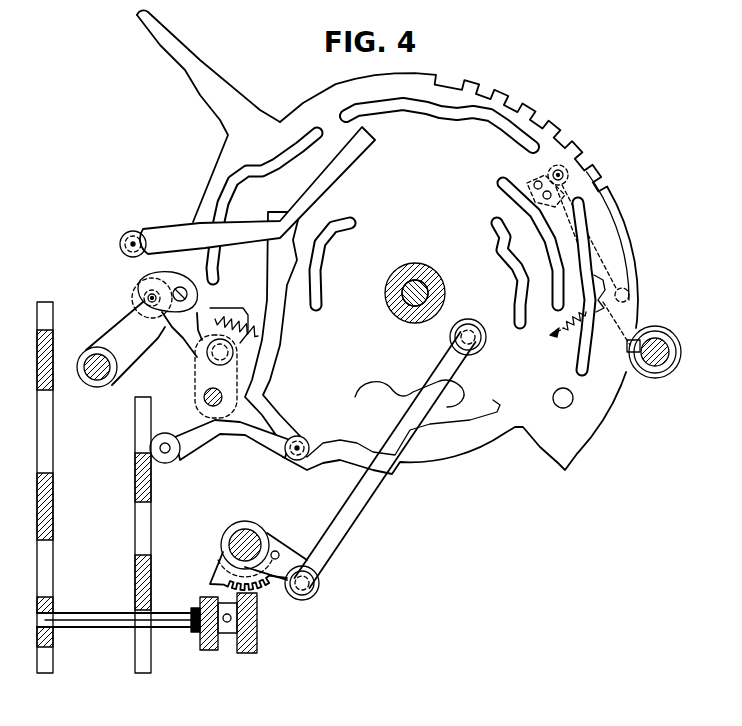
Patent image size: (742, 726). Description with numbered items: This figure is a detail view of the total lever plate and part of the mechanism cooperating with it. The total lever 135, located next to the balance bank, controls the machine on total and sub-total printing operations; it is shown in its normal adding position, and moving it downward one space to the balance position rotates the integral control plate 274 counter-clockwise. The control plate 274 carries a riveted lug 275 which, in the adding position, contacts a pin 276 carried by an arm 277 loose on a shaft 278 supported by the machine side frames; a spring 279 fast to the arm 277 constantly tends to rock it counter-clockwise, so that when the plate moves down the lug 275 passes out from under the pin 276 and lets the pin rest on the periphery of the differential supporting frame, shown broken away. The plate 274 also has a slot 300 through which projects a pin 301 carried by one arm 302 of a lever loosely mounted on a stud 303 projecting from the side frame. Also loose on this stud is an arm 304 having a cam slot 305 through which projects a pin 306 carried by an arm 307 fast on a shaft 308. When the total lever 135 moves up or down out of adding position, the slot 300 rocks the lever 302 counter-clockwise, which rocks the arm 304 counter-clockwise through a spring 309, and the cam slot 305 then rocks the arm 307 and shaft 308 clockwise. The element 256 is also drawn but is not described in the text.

The total lever 135 is at (222, 92).
The total lever control plate 274 is at (422, 79).
The lug 275 is at (540, 177).
The pin 276 is at (585, 173).
The arm 277 is at (640, 307).
The shaft 278 is at (668, 340).
The spring 279 is at (558, 335).
The slot 300 is at (282, 397).
The pin 301 is at (303, 434).
The lever 302 is at (233, 422).
The stud 303 is at (205, 393).
The arm 304 is at (172, 332).
The cam slot 305 is at (197, 303).
The pin 306 is at (140, 295).
The arm 307 is at (130, 330).
The shaft 308 is at (92, 343).
The spring 309 is at (275, 327).
The sector gear lever 256 is at (252, 540).